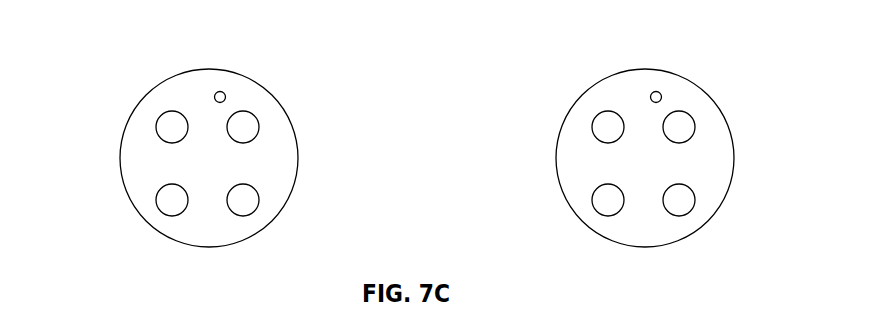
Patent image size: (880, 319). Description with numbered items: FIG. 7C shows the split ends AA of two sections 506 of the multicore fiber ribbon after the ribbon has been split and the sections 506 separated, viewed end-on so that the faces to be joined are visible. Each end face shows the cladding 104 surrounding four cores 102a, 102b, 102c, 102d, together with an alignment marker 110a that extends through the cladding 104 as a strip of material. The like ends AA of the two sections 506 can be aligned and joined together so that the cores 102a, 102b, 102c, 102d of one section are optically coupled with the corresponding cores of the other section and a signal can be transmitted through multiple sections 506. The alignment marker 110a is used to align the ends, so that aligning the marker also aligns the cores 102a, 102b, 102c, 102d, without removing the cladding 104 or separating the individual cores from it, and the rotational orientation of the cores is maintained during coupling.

The section 506 is at (146, 66).
The cladding 104 is at (288, 155).
The core 102a is at (156, 127).
The core 102b is at (260, 127).
The core 102c is at (260, 200).
The core 102d is at (156, 200).
The alignment marker 110a is at (226, 96).